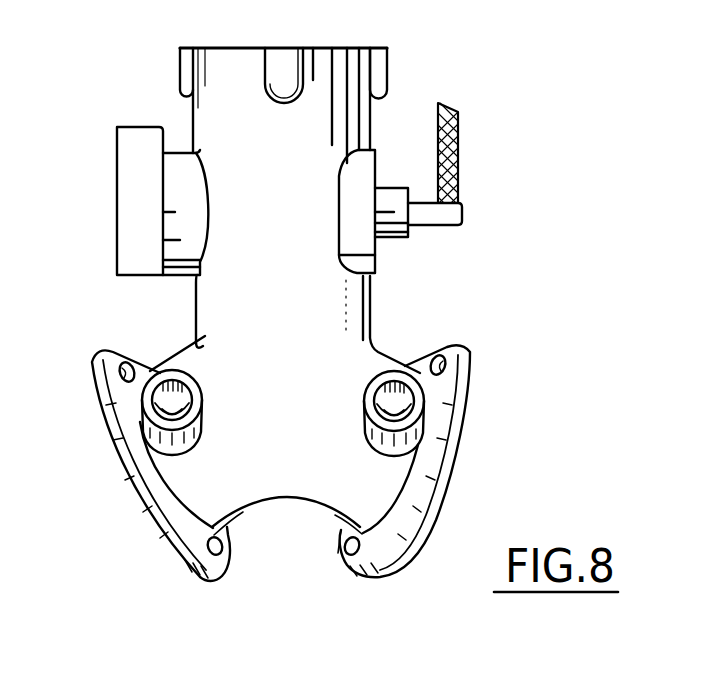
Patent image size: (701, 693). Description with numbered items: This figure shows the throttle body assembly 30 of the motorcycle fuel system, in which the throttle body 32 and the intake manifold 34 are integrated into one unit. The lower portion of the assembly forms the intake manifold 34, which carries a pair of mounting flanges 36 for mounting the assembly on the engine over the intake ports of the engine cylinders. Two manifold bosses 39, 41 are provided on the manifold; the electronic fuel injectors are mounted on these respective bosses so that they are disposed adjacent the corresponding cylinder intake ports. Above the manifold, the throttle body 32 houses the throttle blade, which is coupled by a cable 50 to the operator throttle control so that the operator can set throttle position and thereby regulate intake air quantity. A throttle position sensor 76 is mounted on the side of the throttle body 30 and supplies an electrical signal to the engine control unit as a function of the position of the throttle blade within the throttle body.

The throttle body assembly 30 is at (98, 313).
The throttle body 32 is at (360, 122).
The intake manifold 34 is at (313, 485).
The mounting flanges 36 is at (475, 377).
The manifold boss 39 is at (147, 438).
The manifold boss 41 is at (427, 428).
The cable 50 is at (455, 163).
The throttle position sensor 76 is at (120, 188).